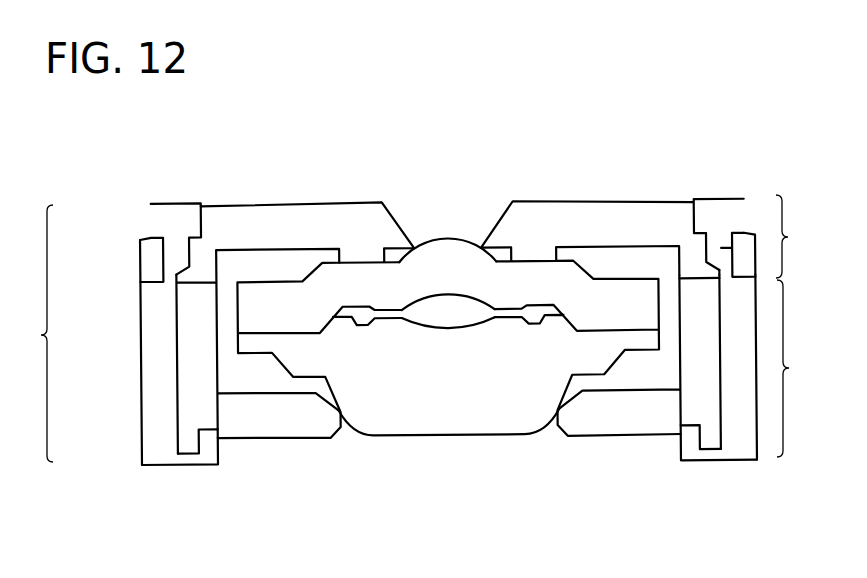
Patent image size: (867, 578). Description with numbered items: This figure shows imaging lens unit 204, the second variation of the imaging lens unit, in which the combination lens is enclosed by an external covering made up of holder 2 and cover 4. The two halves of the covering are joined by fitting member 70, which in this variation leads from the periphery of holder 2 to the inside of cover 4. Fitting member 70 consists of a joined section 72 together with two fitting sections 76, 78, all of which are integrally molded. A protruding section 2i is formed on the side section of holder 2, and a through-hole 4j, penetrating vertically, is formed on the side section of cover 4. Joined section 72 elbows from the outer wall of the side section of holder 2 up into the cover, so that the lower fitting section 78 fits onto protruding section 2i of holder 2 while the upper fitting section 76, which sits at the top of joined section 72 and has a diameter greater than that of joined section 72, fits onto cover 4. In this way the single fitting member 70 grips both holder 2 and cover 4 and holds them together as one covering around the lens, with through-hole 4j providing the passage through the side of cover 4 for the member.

The imaging lens unit 204 is at (642, 138).
The fitting member 70 is at (31, 333).
The joined section 72 is at (158, 355).
The fitting section 76 is at (170, 216).
The fitting section 78 is at (207, 449).
The cover 4 is at (645, 237).
The through-hole 4j is at (722, 248).
The holder 2 is at (685, 368).
The protruding section 2i is at (708, 428).